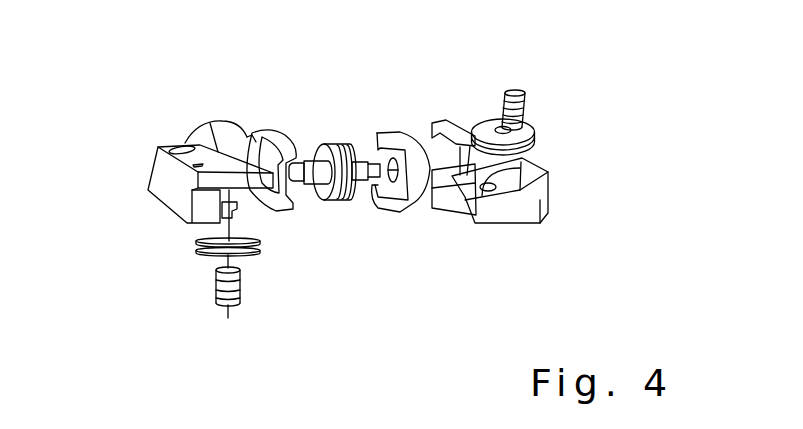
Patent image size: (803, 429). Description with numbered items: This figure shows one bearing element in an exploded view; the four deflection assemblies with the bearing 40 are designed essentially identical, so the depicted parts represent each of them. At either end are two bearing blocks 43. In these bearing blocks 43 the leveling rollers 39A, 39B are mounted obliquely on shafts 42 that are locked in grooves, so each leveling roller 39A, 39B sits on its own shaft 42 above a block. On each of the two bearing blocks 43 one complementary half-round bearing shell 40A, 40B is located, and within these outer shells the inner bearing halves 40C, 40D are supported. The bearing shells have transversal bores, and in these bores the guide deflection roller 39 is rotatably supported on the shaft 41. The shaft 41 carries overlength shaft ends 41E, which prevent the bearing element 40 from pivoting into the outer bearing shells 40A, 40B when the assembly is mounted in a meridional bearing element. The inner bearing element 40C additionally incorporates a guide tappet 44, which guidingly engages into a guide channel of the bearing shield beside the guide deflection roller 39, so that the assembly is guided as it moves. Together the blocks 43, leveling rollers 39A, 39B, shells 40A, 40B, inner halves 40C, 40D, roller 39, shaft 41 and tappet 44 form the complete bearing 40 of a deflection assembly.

The guide deflection roller 39 is at (337, 143).
The leveling roller 39A is at (197, 252).
The leveling roller 39B is at (535, 137).
The bearing 40 is at (378, 108).
The half-round bearing shell 40A is at (478, 93).
The half-round bearing shell 40B is at (213, 128).
The inner bearing half 40C is at (275, 129).
The inner bearing half 40D is at (381, 130).
The shaft 41 is at (361, 182).
The overlength shaft end 41E is at (303, 182).
The shaft 42 is at (555, 73).
The bearing block 43 is at (158, 148).
The guide tappet 44 is at (273, 130).